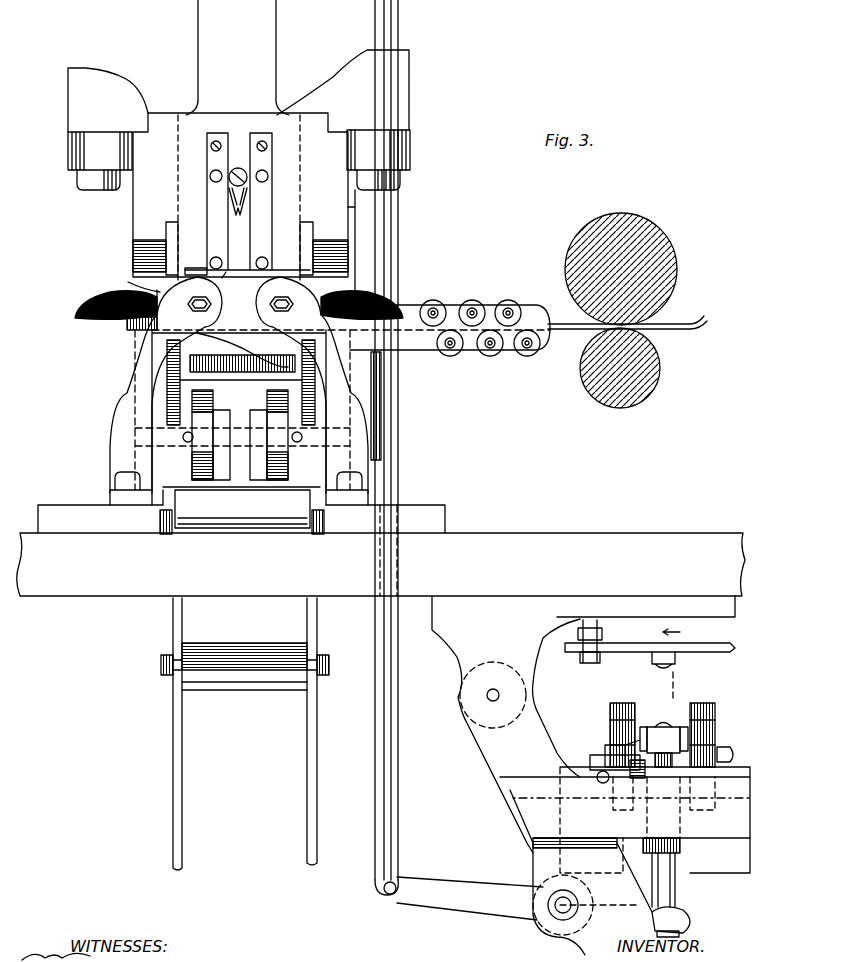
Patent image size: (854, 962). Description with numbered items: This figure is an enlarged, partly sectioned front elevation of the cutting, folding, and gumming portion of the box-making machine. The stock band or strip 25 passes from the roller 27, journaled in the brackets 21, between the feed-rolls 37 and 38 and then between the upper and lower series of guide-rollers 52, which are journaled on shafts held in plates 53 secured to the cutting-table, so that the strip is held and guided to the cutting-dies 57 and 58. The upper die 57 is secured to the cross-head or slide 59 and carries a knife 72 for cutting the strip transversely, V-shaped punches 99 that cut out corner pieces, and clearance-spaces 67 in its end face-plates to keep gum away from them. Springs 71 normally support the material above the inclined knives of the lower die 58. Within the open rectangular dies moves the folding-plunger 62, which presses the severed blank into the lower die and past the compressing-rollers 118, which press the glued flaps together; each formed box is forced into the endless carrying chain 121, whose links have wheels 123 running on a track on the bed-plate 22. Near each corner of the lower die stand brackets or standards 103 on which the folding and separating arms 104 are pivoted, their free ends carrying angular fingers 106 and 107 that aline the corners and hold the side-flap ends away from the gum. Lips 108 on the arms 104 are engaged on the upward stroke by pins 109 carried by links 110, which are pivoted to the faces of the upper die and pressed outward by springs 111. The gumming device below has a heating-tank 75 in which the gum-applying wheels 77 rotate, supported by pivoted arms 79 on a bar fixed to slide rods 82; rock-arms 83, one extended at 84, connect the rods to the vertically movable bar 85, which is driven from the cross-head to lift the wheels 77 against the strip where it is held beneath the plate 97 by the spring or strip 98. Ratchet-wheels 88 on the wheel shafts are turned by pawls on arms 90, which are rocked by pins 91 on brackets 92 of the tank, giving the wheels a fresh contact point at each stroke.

The brackets 21 is at (508, 788).
The bed-plate 22 is at (548, 540).
The stock band or strip 25 is at (630, 316).
The roller 27 is at (458, 708).
The feed-roll 37 is at (628, 209).
The feed-roll 38 is at (631, 405).
The guide-rollers 52 is at (505, 300).
The plates 53 is at (535, 307).
The upper die 57 is at (100, 185).
The lower die 58 is at (241, 431).
The cross-head or slide 59 is at (78, 98).
The folding-plunger 62 is at (273, 52).
The clearance-spaces 67 is at (197, 268).
The springs 71 is at (244, 353).
The knife 72 is at (352, 228).
The tank 75 is at (742, 862).
The gum-applying wheels 77 is at (612, 716).
The levers or arms 79 is at (680, 728).
The slide rods or bars 82 is at (677, 894).
The rock-arms 83 is at (572, 935).
The extension of rock-arm 84 is at (470, 912).
The vertically-movable bar 85 is at (388, 777).
The ratchet-wheel 88 is at (733, 762).
The arms 90 is at (633, 780).
The lugs or pins 91 is at (630, 748).
The brackets 92 is at (590, 772).
The plate 97 is at (727, 649).
The spring or strip 98 is at (682, 660).
The punches 99 is at (135, 258).
The brackets or standards 103 is at (122, 404).
The folding and separating arms 104 is at (128, 278).
The finger 106 is at (80, 314).
The finger 107 is at (127, 320).
The extensions or lips 108 is at (268, 306).
The pins 109 is at (240, 284).
The arms or links 110 is at (258, 223).
The springs 111 is at (246, 203).
The compressing-rollers 118 is at (213, 403).
The endless carrying belt or chain 121 is at (232, 678).
The wheels 123 is at (158, 522).